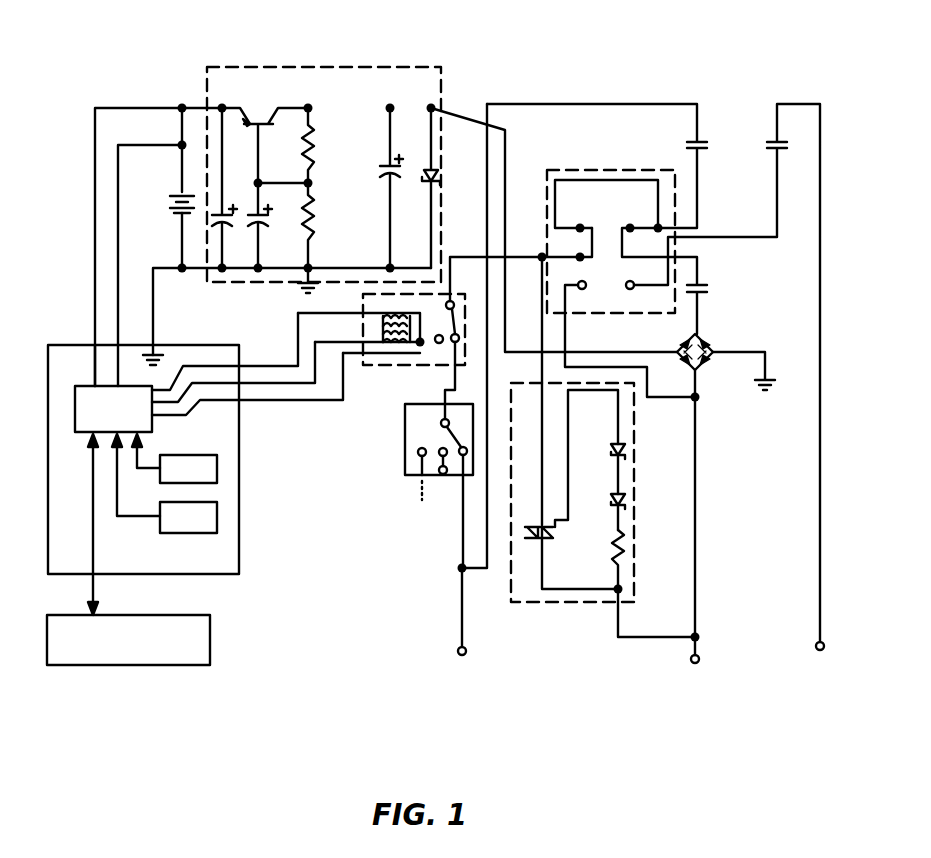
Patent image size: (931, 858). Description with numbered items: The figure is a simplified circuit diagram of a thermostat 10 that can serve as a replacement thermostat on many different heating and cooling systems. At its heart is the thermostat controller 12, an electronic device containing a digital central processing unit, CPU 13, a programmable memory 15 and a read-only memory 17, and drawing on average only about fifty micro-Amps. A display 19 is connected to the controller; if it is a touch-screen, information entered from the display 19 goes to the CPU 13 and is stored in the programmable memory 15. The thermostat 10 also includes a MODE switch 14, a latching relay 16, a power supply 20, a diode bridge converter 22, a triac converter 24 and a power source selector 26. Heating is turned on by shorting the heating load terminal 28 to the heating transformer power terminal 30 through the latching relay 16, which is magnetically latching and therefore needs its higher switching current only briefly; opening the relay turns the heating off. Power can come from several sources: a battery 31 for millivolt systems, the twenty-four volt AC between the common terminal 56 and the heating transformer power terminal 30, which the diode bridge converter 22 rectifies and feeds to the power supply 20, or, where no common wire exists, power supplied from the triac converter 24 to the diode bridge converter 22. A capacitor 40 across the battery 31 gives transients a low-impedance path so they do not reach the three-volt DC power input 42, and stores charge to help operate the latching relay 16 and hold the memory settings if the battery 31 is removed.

The thermostat 10 is at (650, 57).
The thermostat controller 12 is at (195, 464).
The digital central processing unit 13 is at (86, 385).
The MODE switch 14 is at (404, 458).
The programmable memory 15 is at (195, 455).
The latching relay 16 is at (402, 367).
The read-only memory 17 is at (160, 503).
The display 19 is at (210, 615).
The power supply 20 is at (343, 162).
The diode bridge converter 22 is at (704, 370).
The triac converter 24 is at (636, 498).
The power source selector 26 is at (570, 172).
The heating load terminal 28 is at (468, 647).
The heating transformer power terminal 30 is at (699, 643).
The battery 31 is at (182, 190).
The capacitor 40 is at (232, 214).
The 3 VDC power input 42 is at (93, 343).
The common terminal 56 is at (815, 646).